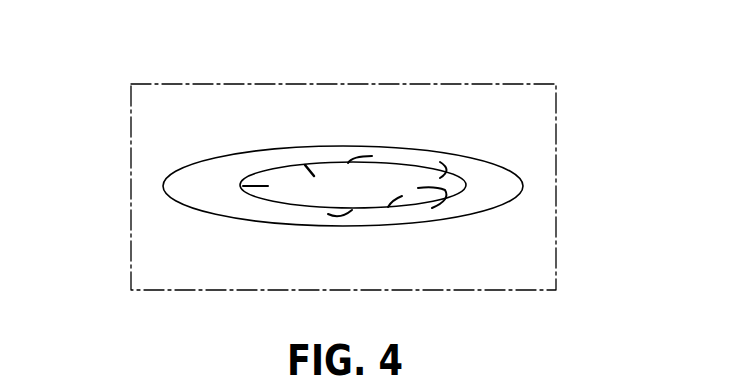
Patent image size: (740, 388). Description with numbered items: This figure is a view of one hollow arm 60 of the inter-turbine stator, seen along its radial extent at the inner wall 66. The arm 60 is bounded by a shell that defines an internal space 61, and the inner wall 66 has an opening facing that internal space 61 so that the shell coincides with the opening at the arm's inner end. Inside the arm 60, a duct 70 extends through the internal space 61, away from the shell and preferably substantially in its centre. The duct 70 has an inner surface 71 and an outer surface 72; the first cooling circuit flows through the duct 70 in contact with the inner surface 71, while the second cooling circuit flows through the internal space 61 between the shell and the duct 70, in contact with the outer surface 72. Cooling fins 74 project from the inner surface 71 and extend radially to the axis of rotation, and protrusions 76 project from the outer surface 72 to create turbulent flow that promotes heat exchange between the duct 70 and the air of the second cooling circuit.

The arm 60 is at (108, 216).
The internal space 61 is at (490, 197).
The inner wall 66 is at (165, 263).
The duct 70 is at (464, 185).
The inner surface 71 is at (372, 208).
The outer surface 72 is at (392, 166).
The cooling fins 74 is at (258, 188).
The protrusions 76 is at (262, 162).